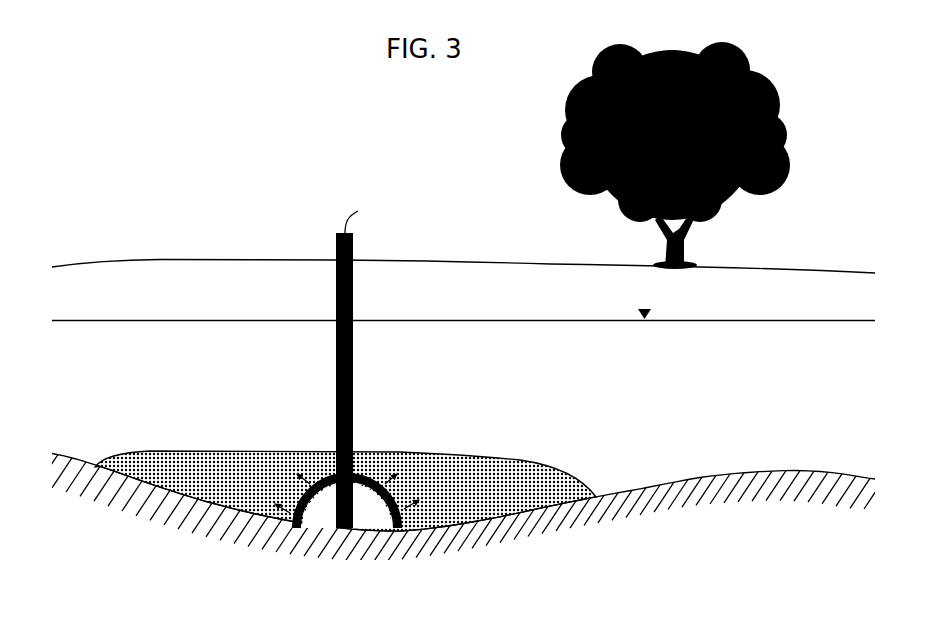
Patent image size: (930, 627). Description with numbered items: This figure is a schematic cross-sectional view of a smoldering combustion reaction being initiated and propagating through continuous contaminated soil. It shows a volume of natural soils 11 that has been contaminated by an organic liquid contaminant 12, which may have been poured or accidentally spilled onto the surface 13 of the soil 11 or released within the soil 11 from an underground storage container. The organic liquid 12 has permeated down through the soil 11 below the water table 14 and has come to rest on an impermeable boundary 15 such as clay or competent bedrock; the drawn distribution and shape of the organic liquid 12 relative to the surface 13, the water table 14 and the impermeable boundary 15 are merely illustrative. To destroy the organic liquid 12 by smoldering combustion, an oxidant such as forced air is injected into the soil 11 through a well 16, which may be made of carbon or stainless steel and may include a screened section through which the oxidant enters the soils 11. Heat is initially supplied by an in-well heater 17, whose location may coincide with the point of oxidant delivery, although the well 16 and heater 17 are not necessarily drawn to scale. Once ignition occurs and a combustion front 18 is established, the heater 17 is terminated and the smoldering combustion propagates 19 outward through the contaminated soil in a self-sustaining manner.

The natural soils 11 is at (624, 396).
The organic liquid contaminant 12 is at (523, 496).
The surface 13 is at (634, 266).
The water table 14 is at (717, 320).
The impermeable boundary 15 is at (819, 472).
The well 16 is at (354, 380).
The in-well heater 17 is at (335, 447).
The combustion front 18 is at (388, 512).
The smoldering combustion propagation 19 is at (389, 479).